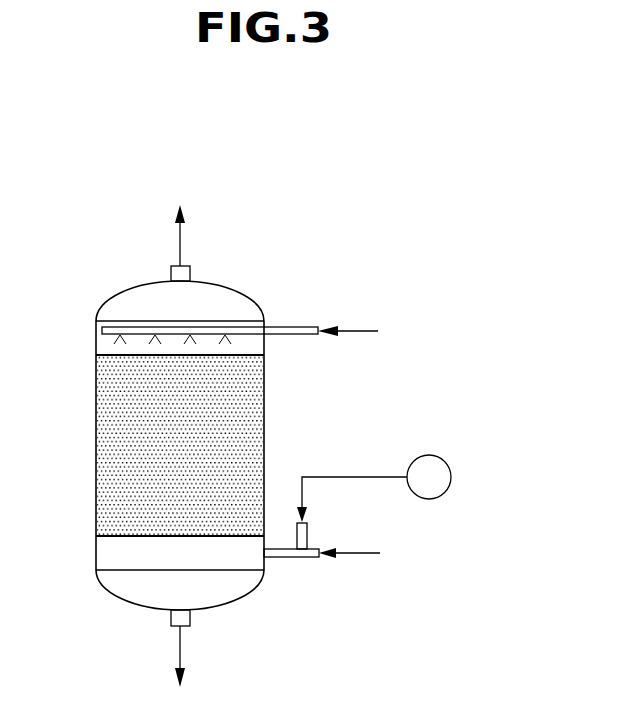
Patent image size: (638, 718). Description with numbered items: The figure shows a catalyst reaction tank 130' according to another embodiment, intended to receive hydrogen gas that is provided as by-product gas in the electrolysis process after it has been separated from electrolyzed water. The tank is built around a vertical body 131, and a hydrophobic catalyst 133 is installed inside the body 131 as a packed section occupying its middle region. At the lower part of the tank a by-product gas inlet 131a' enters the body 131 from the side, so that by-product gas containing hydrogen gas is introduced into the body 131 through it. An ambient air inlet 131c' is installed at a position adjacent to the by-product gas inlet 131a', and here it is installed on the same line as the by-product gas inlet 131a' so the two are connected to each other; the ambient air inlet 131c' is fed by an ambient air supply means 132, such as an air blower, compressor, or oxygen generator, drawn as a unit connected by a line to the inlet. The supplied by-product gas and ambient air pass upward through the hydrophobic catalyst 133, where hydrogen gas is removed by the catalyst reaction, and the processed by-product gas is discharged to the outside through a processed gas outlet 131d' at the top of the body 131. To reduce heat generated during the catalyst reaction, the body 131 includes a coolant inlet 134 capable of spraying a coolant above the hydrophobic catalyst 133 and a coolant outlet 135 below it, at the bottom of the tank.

The catalyst reaction tank 130' is at (225, 446).
The body 131 is at (150, 288).
The processed gas outlet 131d' is at (222, 243).
The coolant inlet 134 is at (298, 327).
The hydrophobic catalyst 133 is at (257, 407).
The ambient air supply means 132 is at (430, 455).
The ambient air inlet 131c' is at (343, 525).
The by-product gas inlet 131a' is at (322, 583).
The coolant outlet 135 is at (168, 622).